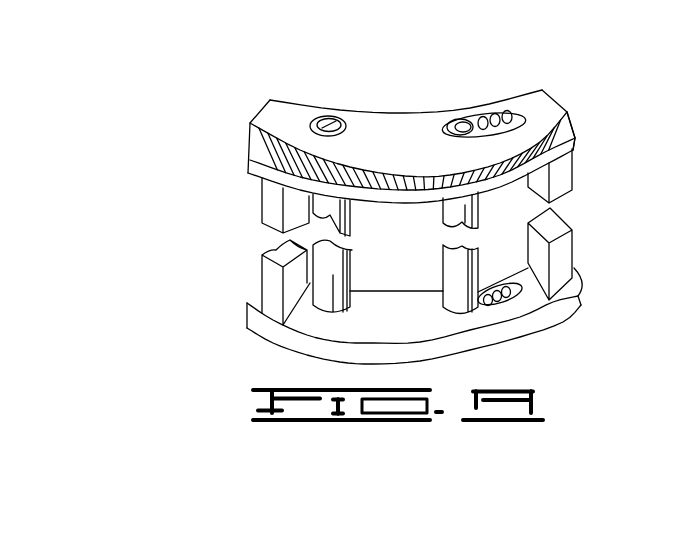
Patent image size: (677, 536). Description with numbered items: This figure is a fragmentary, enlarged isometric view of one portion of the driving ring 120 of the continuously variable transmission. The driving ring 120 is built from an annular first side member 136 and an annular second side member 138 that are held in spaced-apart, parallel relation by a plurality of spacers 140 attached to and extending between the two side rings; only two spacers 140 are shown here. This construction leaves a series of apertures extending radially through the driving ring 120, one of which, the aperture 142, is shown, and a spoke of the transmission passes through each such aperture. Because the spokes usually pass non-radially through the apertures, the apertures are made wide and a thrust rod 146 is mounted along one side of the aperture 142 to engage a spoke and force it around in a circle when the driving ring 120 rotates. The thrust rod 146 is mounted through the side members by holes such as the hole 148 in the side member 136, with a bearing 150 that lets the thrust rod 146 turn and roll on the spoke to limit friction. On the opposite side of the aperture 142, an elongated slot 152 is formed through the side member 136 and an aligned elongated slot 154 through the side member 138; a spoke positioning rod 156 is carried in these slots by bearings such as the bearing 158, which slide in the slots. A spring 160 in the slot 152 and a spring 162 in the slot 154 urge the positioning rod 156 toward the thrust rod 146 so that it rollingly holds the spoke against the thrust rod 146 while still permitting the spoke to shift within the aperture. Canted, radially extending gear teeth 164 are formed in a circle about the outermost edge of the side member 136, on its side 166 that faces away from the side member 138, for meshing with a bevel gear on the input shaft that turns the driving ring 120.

The driving ring 120 is at (593, 115).
The first side member 136 is at (410, 122).
The second side member 138 is at (571, 292).
The spacer 140 is at (268, 273).
The aperture 142 is at (388, 260).
The thrust rod 146 is at (325, 270).
The hole 148 is at (318, 118).
The bearing 150 is at (340, 116).
The elongated slot 152 is at (487, 117).
The elongated slot 154 is at (500, 306).
The spoke positioning rod 156 is at (456, 296).
The bearing 158 is at (468, 127).
The spring 160 is at (505, 120).
The spring 162 is at (500, 306).
The gear teeth 164 is at (537, 132).
The side 166 is at (382, 132).